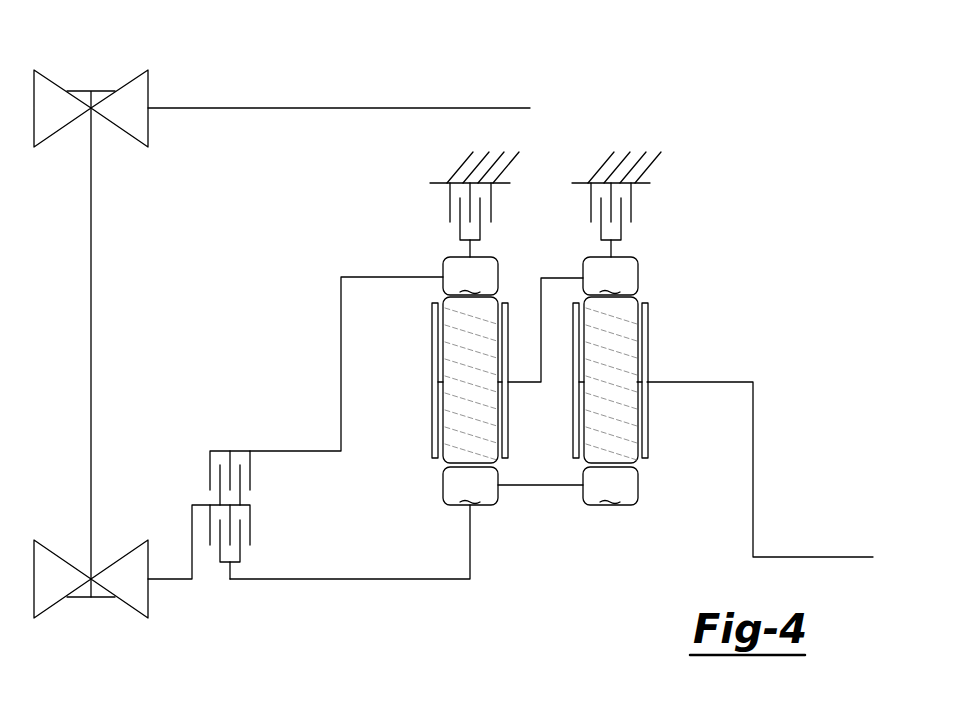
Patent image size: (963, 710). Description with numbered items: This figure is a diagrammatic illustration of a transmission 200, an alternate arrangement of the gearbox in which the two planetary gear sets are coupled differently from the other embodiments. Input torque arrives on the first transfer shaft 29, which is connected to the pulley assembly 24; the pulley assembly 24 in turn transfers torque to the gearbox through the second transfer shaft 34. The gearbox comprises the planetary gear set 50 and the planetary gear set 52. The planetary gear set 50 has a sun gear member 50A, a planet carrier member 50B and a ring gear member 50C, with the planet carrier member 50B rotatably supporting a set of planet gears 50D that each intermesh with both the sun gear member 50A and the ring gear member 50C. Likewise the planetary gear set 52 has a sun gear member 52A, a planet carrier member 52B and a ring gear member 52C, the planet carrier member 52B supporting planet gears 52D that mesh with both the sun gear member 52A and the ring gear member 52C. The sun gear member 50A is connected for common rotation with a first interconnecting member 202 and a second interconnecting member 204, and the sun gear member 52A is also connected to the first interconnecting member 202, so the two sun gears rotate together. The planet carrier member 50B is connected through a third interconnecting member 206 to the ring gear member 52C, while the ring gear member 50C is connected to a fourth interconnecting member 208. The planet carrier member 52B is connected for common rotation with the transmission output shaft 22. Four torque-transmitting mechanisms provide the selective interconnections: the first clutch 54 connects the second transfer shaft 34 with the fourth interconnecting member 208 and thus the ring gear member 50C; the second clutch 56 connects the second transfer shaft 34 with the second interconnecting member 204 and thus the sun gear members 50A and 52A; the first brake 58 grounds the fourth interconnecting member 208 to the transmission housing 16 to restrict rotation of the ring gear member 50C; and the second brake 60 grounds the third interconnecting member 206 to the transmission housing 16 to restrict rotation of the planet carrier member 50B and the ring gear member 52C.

The transmission 200 is at (694, 110).
The pulley assembly 24 is at (89, 55).
The first transfer shaft 29 is at (275, 107).
The second transfer shaft 34 is at (170, 582).
The first clutch 54 is at (210, 466).
The second clutch 56 is at (250, 538).
The first brake 58 is at (450, 204).
The second brake 60 is at (631, 204).
The transmission housing 16 is at (510, 172).
The planetary gear set 50 is at (462, 450).
The sun gear member 50A is at (470, 486).
The planet carrier member 50B is at (432, 453).
The ring gear member 50C is at (470, 276).
The planet gears 50D is at (508, 459).
The planetary gear set 52 is at (653, 416).
The sun gear member 52A is at (610, 486).
The planet carrier member 52B is at (650, 311).
The ring gear member 52C is at (610, 276).
The planet gears 52D is at (638, 463).
The first shaft or interconnecting member 202 is at (538, 486).
The second shaft or interconnecting member 204 is at (402, 578).
The third shaft or interconnecting member 206 is at (541, 278).
The fourth shaft or interconnecting member 208 is at (341, 365).
The transmission output shaft 22 is at (755, 470).